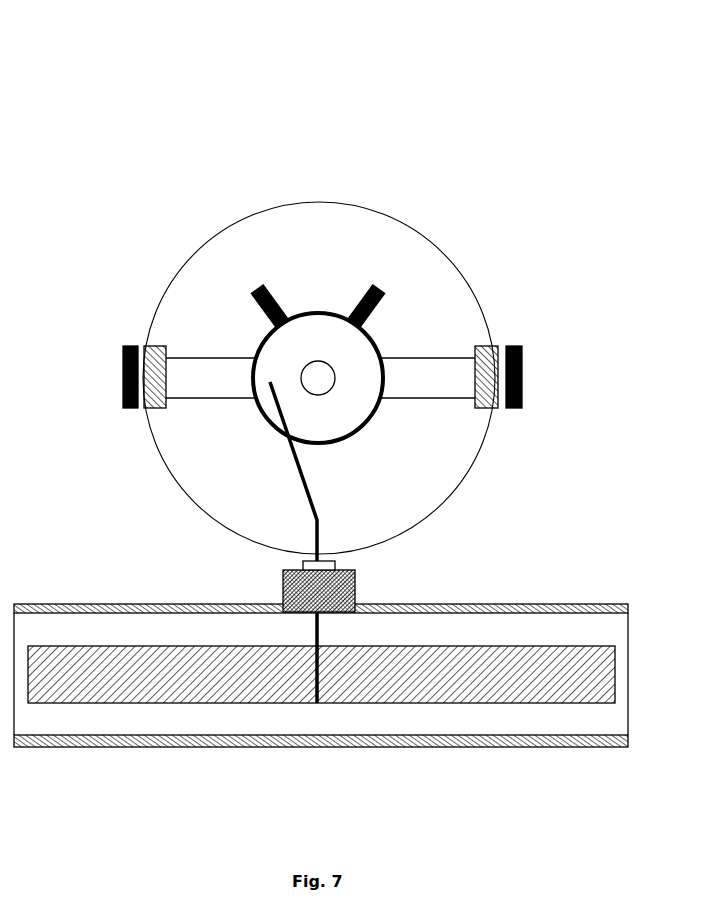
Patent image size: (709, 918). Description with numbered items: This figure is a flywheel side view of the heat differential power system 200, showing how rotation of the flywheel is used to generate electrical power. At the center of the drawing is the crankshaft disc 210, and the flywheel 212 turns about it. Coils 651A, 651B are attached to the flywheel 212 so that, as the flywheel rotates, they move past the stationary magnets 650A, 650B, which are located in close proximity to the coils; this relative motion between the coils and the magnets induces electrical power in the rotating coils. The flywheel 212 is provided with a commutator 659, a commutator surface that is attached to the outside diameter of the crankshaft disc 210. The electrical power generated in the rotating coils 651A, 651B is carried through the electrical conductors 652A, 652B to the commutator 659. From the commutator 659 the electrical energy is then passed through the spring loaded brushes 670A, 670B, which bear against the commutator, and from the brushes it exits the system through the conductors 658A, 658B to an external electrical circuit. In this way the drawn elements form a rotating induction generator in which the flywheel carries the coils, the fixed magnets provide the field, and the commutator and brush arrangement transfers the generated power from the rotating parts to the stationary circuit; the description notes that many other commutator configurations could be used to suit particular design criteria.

The heat differential power system 200 is at (409, 116).
The crankshaft disc 210 is at (355, 412).
The flywheel 212 is at (478, 468).
The stationary magnet 650A is at (510, 410).
The stationary magnet 650B is at (130, 410).
The coil 651A is at (497, 346).
The coil 651B is at (155, 346).
The electrical conductor 652A is at (196, 358).
The electrical conductor 652B is at (218, 398).
The conductor 658A is at (377, 287).
The conductor 658B is at (263, 283).
The commutator 659 is at (273, 428).
The spring loaded brush 670A is at (367, 233).
The spring loaded brush 670B is at (300, 238).